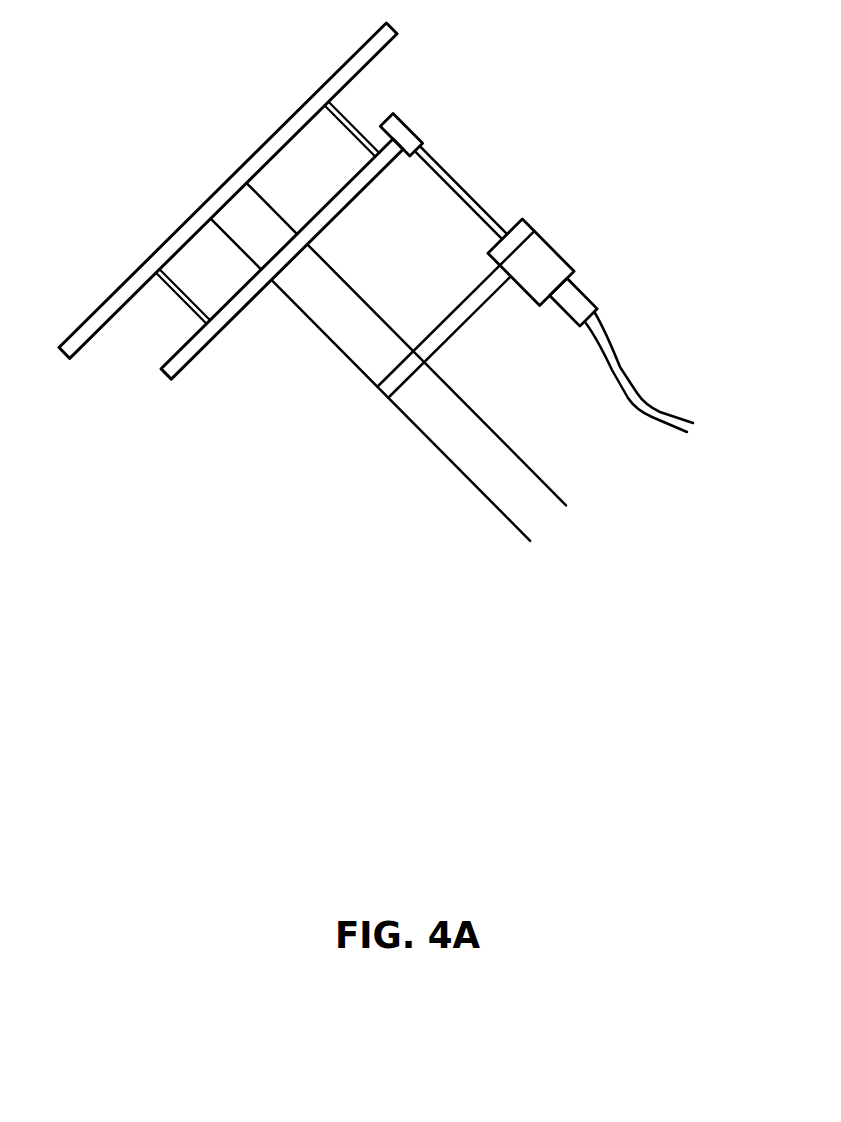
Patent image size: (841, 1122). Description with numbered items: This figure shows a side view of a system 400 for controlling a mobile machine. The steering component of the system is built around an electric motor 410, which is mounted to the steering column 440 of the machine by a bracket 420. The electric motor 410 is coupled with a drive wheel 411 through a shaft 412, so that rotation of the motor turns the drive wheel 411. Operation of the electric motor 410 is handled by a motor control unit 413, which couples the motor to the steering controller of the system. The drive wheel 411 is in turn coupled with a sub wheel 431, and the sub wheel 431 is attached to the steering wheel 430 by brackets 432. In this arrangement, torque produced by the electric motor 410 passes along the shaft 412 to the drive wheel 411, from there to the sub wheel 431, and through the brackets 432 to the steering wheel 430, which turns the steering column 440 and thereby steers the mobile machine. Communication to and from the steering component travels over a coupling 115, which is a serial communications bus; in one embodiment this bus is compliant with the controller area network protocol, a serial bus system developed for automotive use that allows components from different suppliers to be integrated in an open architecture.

The system for controlling a mobile machine 400 is at (210, 27).
The steering wheel 430 is at (282, 137).
The sub wheel 431 is at (173, 367).
The brackets 432 is at (338, 110).
The steering column 440 is at (487, 462).
The bracket 420 is at (469, 317).
The drive wheel 411 is at (405, 134).
The shaft 412 is at (465, 184).
The electric motor 410 is at (513, 233).
The motor control unit 413 is at (573, 298).
The coupling 115 is at (645, 398).